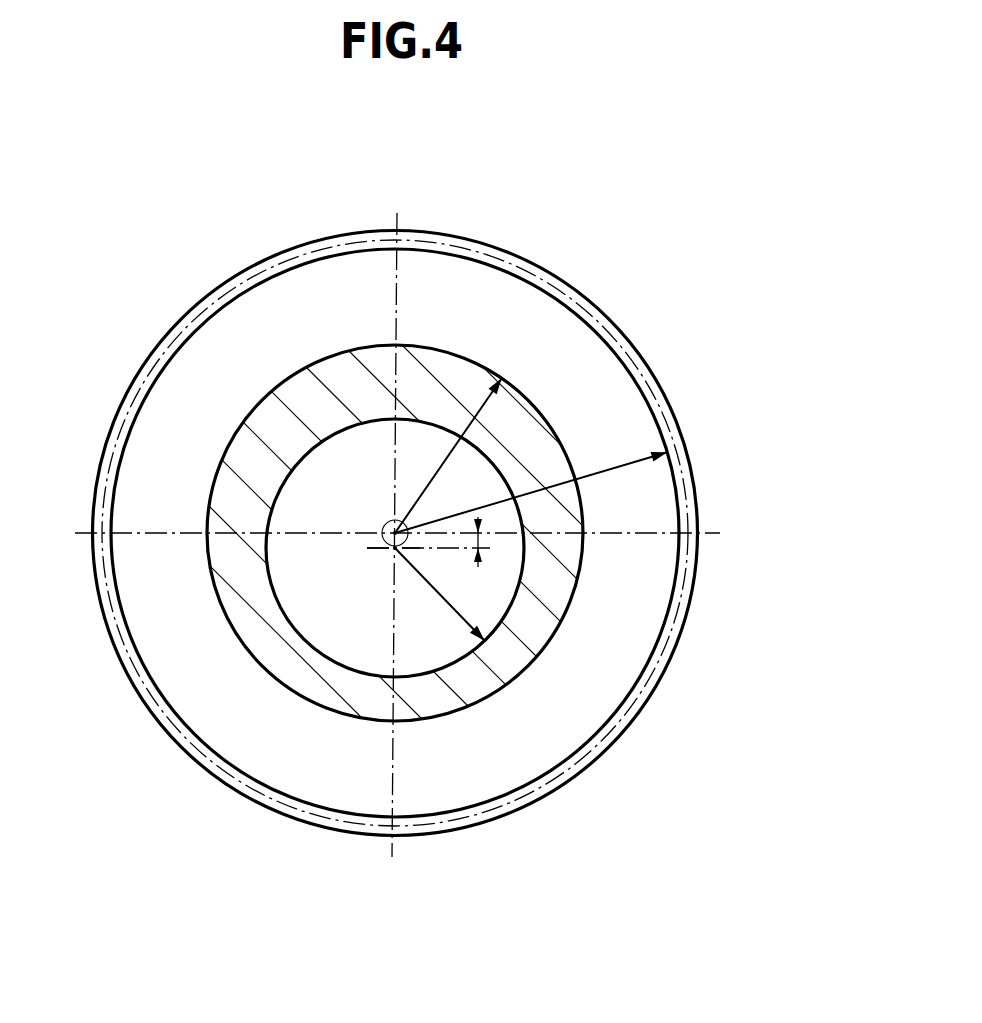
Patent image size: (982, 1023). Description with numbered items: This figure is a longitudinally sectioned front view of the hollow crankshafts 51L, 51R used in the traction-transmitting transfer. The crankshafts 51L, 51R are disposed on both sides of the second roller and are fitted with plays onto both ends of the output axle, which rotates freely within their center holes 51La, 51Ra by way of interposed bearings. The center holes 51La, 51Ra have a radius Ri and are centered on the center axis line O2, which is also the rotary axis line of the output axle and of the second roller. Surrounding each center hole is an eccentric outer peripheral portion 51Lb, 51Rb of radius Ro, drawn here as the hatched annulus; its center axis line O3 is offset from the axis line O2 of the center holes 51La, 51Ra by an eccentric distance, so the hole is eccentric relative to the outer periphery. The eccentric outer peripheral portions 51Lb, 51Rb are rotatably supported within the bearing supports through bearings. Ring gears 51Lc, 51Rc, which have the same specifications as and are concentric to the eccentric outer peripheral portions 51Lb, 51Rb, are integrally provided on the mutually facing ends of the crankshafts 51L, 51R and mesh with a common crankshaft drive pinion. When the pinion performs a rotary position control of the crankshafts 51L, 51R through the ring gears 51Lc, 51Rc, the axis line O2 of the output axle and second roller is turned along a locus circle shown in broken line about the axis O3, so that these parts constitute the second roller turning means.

The hollow crankshaft 51L is at (429, 533).
The hollow crankshaft 51R is at (632, 312).
The center hole 51La is at (547, 513).
The center hole 51Ra is at (474, 464).
The eccentric outer peripheral portion 51Lb is at (438, 473).
The eccentric outer peripheral portion 51Rb is at (467, 352).
The ring gear 51Lc is at (467, 533).
The ring gear 51Rc is at (665, 676).
The radius of eccentric outer peripheral portion Ro is at (437, 477).
The radius of center hole Ri is at (450, 608).
The center axis line of eccentric outer peripheral portions O3 is at (389, 521).
The center axis line of center holes O2 is at (392, 551).